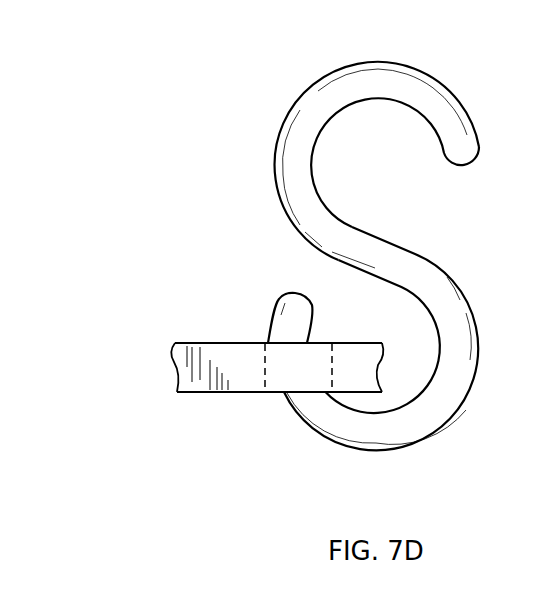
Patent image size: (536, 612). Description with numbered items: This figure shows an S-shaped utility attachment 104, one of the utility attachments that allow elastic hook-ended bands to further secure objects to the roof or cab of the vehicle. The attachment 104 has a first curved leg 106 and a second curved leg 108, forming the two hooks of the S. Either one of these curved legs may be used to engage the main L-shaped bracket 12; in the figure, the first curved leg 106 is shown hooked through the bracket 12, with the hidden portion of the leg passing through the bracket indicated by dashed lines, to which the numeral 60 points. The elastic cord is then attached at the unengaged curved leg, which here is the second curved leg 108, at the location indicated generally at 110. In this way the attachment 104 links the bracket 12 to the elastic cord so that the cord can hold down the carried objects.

The S-shaped utility attachment 104 is at (303, 244).
The second curved leg 108 is at (380, 75).
The first curved leg 106 is at (385, 437).
The elastic cord attachment location 110 is at (373, 128).
The main L-shaped bracket 12 is at (195, 343).
The slot in strap 60 is at (263, 388).